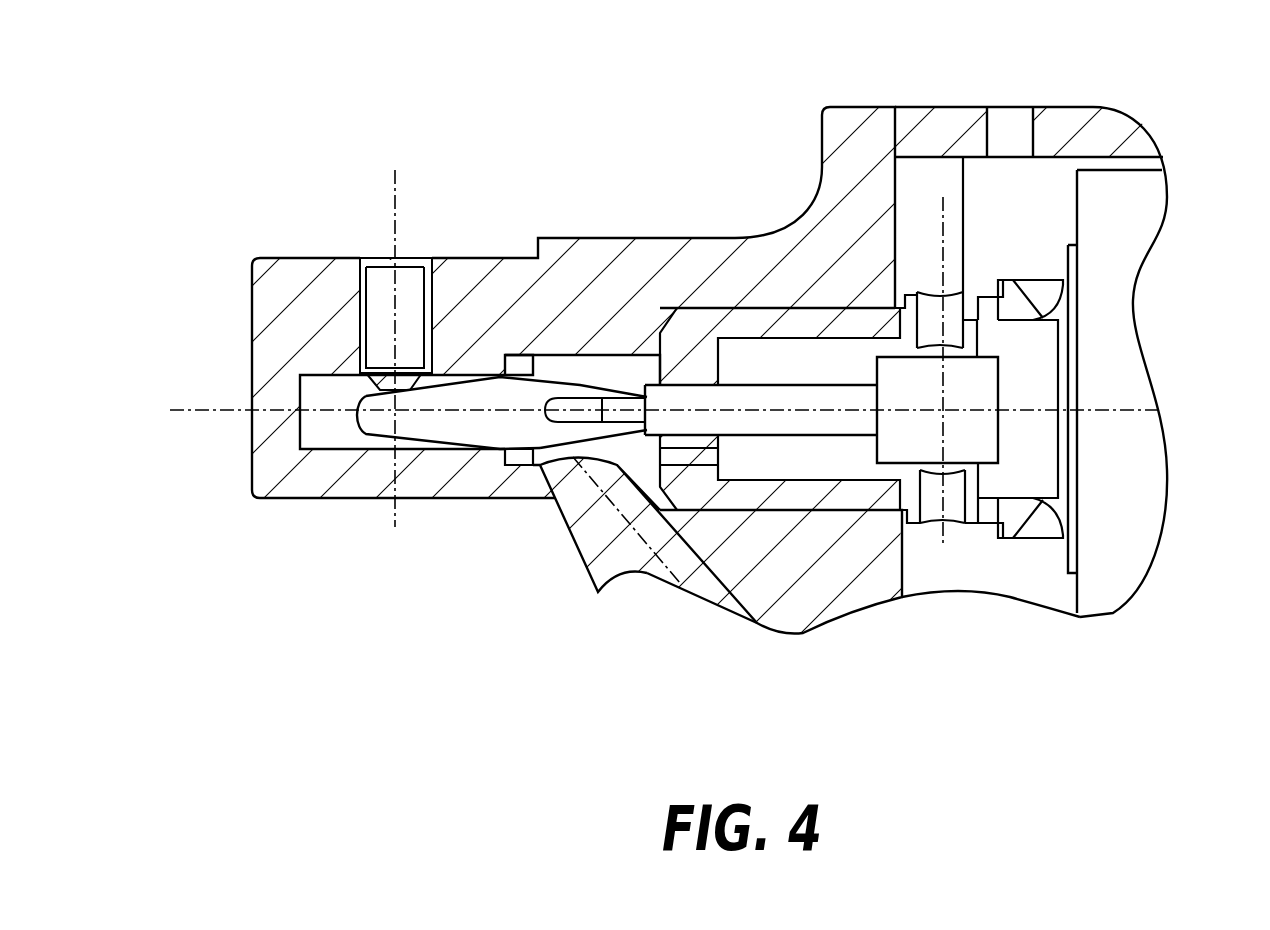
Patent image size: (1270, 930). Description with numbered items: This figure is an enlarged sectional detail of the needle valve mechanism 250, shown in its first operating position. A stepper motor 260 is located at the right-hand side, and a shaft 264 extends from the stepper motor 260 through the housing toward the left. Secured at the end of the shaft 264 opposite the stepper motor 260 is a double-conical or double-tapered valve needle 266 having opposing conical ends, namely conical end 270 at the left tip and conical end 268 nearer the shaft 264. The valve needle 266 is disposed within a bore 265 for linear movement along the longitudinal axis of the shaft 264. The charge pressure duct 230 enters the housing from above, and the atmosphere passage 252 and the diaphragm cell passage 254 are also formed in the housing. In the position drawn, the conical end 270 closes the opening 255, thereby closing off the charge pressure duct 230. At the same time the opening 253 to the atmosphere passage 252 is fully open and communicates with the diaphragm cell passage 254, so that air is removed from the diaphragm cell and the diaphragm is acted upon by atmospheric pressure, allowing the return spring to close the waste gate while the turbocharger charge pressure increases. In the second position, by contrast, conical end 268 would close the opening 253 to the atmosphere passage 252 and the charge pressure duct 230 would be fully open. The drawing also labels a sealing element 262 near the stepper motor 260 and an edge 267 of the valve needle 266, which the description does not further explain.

The needle valve mechanism 250 is at (638, 238).
The atmosphere passage 252 is at (1000, 107).
The charge pressure duct 230 is at (407, 260).
The conical end 270 is at (411, 388).
The bore 265 is at (320, 433).
The valve needle 266 is at (528, 357).
The nozzle outlet edge 267 is at (508, 448).
The conical end 268 is at (582, 387).
The opening 253 is at (713, 373).
The opening 255 is at (510, 440).
The diaphragm cell passage 254 is at (647, 573).
The shaft 264 is at (795, 437).
The seal and retaining nut 262 is at (990, 503).
The stepper motor 260 is at (1128, 205).